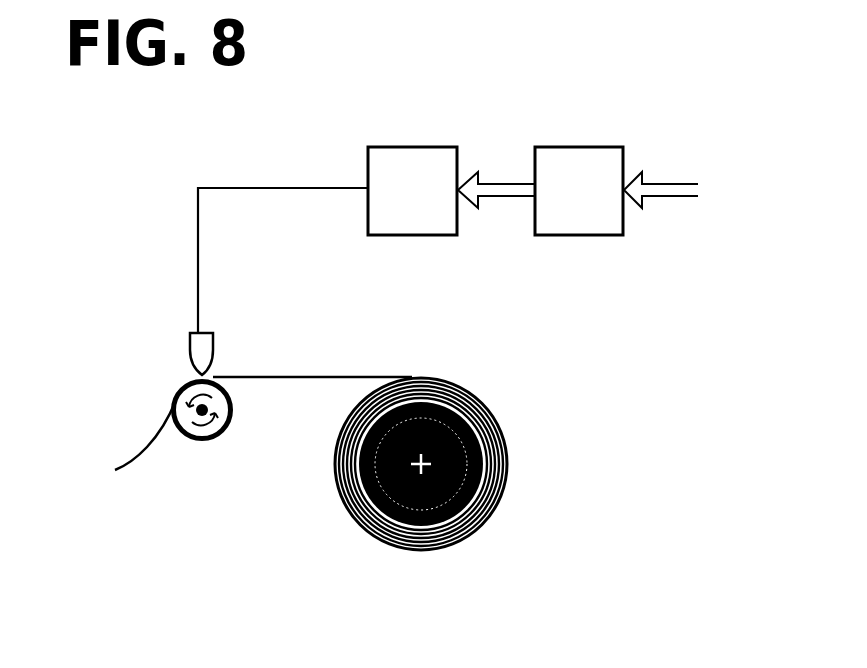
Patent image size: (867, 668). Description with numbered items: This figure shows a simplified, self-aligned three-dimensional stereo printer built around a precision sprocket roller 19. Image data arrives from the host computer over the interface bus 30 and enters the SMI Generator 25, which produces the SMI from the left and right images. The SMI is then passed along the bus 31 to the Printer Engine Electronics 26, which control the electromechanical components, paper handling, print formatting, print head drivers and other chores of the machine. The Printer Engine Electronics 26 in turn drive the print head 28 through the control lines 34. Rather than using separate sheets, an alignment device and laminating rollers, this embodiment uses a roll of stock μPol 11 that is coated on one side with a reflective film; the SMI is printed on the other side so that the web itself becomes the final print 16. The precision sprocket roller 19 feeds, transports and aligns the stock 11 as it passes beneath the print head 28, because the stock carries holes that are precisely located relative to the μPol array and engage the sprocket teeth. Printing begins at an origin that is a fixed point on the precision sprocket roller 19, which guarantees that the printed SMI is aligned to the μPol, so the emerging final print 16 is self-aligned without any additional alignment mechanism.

The μPol stock roll 11 is at (312, 377).
The final print 16 is at (128, 457).
The precision sprocket roller 19 is at (217, 438).
The SMI Generator 25 is at (579, 191).
The Printer Engine Electronics 26 is at (412, 191).
The print head 28 is at (190, 352).
The interface bus 30 is at (673, 184).
The bus 31 is at (497, 184).
The control lines 34 is at (198, 268).